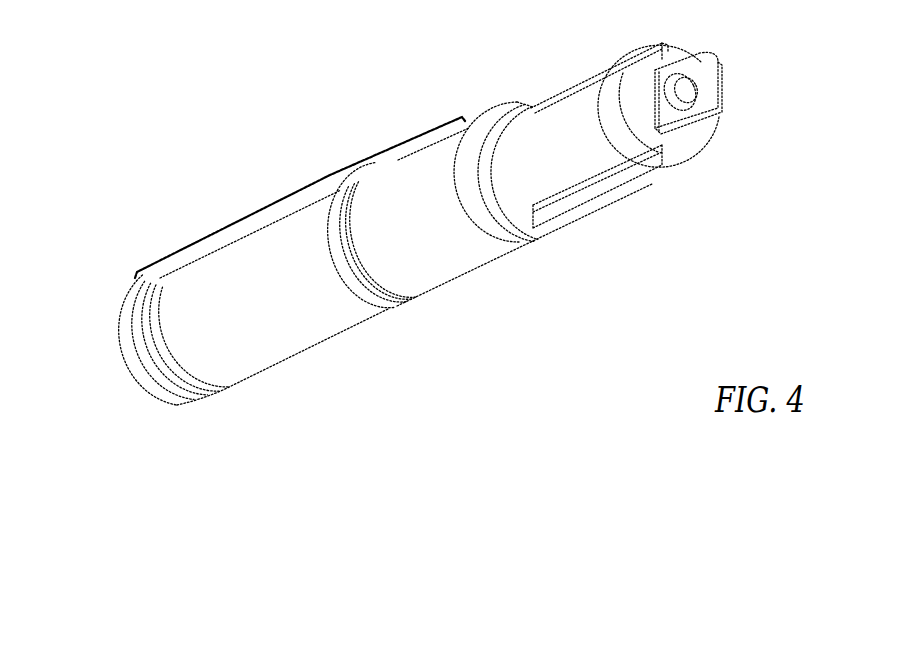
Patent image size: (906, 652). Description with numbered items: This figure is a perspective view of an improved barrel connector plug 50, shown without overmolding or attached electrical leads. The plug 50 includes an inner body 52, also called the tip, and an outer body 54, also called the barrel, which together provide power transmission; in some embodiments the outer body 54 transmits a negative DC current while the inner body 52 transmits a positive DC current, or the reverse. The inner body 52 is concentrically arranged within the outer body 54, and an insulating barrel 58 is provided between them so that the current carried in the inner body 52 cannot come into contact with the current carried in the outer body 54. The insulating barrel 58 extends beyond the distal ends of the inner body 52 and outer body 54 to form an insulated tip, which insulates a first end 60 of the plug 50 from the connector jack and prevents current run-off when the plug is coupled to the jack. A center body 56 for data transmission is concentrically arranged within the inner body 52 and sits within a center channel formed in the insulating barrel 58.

The barrel connector plug 50 is at (382, 210).
The inner body 52 is at (570, 163).
The outer body 54 is at (305, 189).
The center body 56 is at (705, 50).
The insulating barrel 58 is at (126, 298).
The first end 60 is at (112, 378).